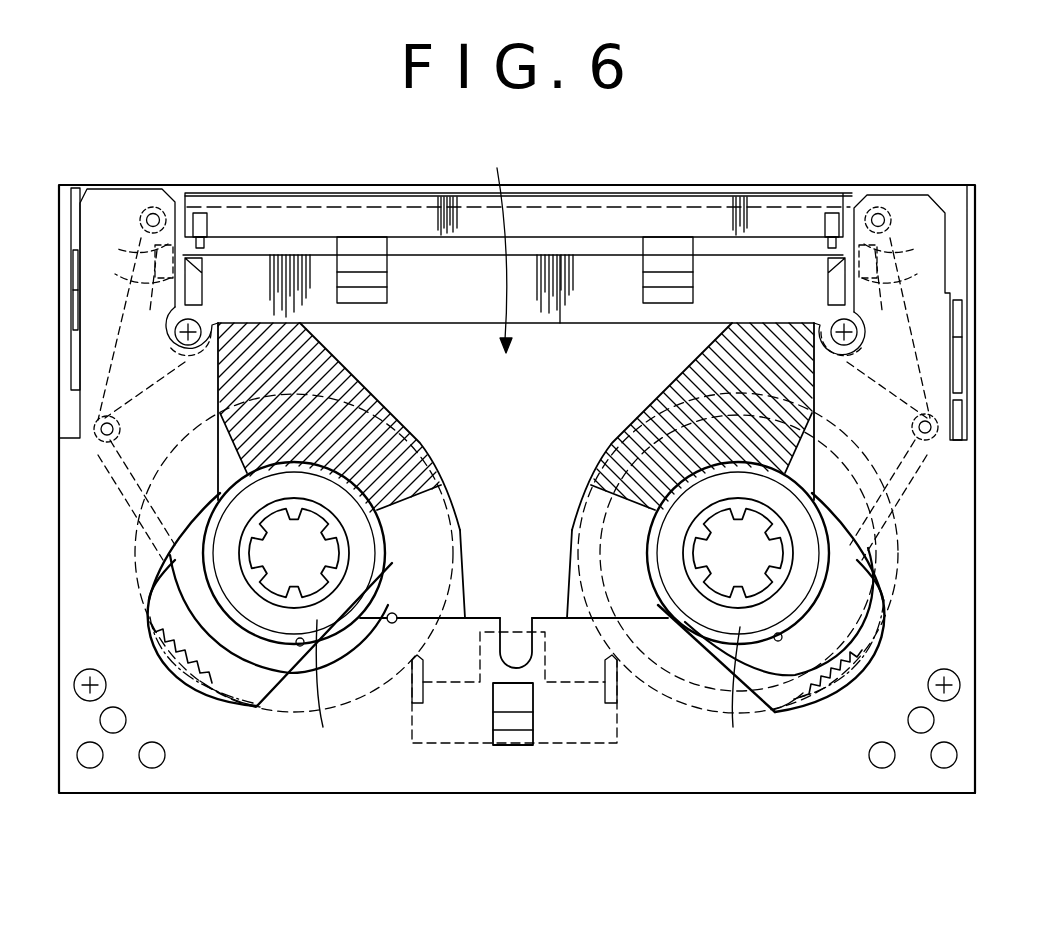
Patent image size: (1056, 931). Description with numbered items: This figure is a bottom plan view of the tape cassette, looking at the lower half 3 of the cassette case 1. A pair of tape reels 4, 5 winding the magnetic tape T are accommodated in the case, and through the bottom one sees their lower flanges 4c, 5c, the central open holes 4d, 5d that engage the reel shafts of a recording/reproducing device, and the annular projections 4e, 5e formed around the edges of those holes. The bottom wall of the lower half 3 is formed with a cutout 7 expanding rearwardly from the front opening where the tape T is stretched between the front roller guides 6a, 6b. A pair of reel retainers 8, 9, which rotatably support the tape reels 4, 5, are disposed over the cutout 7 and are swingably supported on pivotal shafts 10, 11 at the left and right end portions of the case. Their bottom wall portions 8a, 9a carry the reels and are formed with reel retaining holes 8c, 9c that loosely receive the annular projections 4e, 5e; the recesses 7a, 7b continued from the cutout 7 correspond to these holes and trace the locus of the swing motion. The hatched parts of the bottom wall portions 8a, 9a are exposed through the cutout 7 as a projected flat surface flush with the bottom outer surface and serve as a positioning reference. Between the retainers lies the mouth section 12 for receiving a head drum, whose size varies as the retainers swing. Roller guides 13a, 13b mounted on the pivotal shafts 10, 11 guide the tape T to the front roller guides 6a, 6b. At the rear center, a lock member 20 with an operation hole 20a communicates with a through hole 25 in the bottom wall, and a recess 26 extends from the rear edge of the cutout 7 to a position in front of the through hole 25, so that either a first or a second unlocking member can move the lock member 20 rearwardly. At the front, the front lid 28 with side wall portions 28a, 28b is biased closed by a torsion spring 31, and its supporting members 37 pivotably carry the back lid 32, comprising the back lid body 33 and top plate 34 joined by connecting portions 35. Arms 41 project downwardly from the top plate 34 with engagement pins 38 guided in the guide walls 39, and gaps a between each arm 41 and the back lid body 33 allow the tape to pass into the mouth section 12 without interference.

The cassette case 1 is at (128, 797).
The lower half 3 is at (893, 795).
The tape reel 4 is at (895, 547).
The lower flange 4c is at (860, 655).
The open hole 4d is at (690, 566).
The annular projection 4e is at (723, 691).
The tape reel 5 is at (137, 545).
The lower flange 5c is at (192, 647).
The open hole 5d is at (342, 566).
The annular projection 5e is at (320, 688).
The roller guide 6a is at (882, 206).
The roller guide 6b is at (147, 206).
The cutout 7 is at (393, 625).
The recess 7a is at (882, 588).
The recess 7b is at (150, 588).
The reel retainer 8 is at (612, 442).
The bottom wall portion 8a is at (628, 520).
The reel retaining hole 8c is at (780, 641).
The reel retainer 9 is at (418, 442).
The bottom wall portion 9a is at (430, 518).
The reel retaining hole 9c is at (298, 646).
The pivotal shaft 10 is at (938, 427).
The pivotal shaft 11 is at (94, 426).
The mouth section 12 is at (498, 245).
The roller guide 13a is at (940, 458).
The roller guide 13b is at (95, 458).
The lock member 20 is at (577, 745).
The operation hole 20a is at (493, 707).
The through hole 25 is at (523, 707).
The recess 26 is at (515, 620).
The front lid 28 is at (281, 192).
The side wall portion 28a is at (968, 292).
The side wall portion 28b is at (71, 272).
The torsion spring 31 is at (960, 363).
The back lid 32 is at (679, 193).
The back lid body 33 is at (565, 215).
The top plate 34 is at (615, 258).
The connecting portion 35 is at (388, 268).
The supporting member 37 is at (202, 212).
The engagement pin 38 is at (511, 264).
The guide wall 39 is at (513, 239).
The arm 41 is at (178, 293).
The magnetic tape T is at (410, 205).
The gap a is at (200, 261).